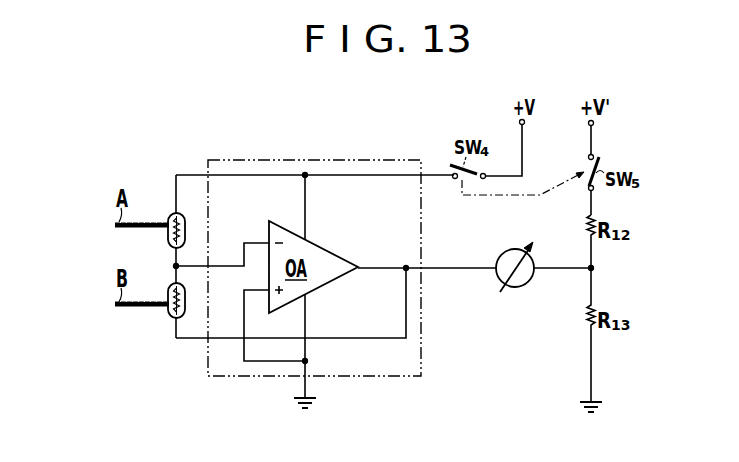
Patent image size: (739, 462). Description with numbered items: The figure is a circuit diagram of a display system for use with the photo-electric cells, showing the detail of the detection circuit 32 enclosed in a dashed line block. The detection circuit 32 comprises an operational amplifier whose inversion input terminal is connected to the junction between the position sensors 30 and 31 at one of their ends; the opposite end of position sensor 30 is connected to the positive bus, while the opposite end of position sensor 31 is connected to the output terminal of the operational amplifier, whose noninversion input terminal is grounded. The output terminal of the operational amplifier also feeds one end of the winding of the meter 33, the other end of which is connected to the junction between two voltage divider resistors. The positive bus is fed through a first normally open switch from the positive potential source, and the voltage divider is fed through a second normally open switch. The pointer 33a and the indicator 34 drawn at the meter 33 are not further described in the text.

The position sensor 30 is at (172, 214).
The position sensor 31 is at (172, 317).
The detection circuit 32 is at (283, 169).
The meter 33 is at (518, 283).
The meter pointer 33a is at (538, 250).
The meter scale/indicator 34 is at (513, 238).